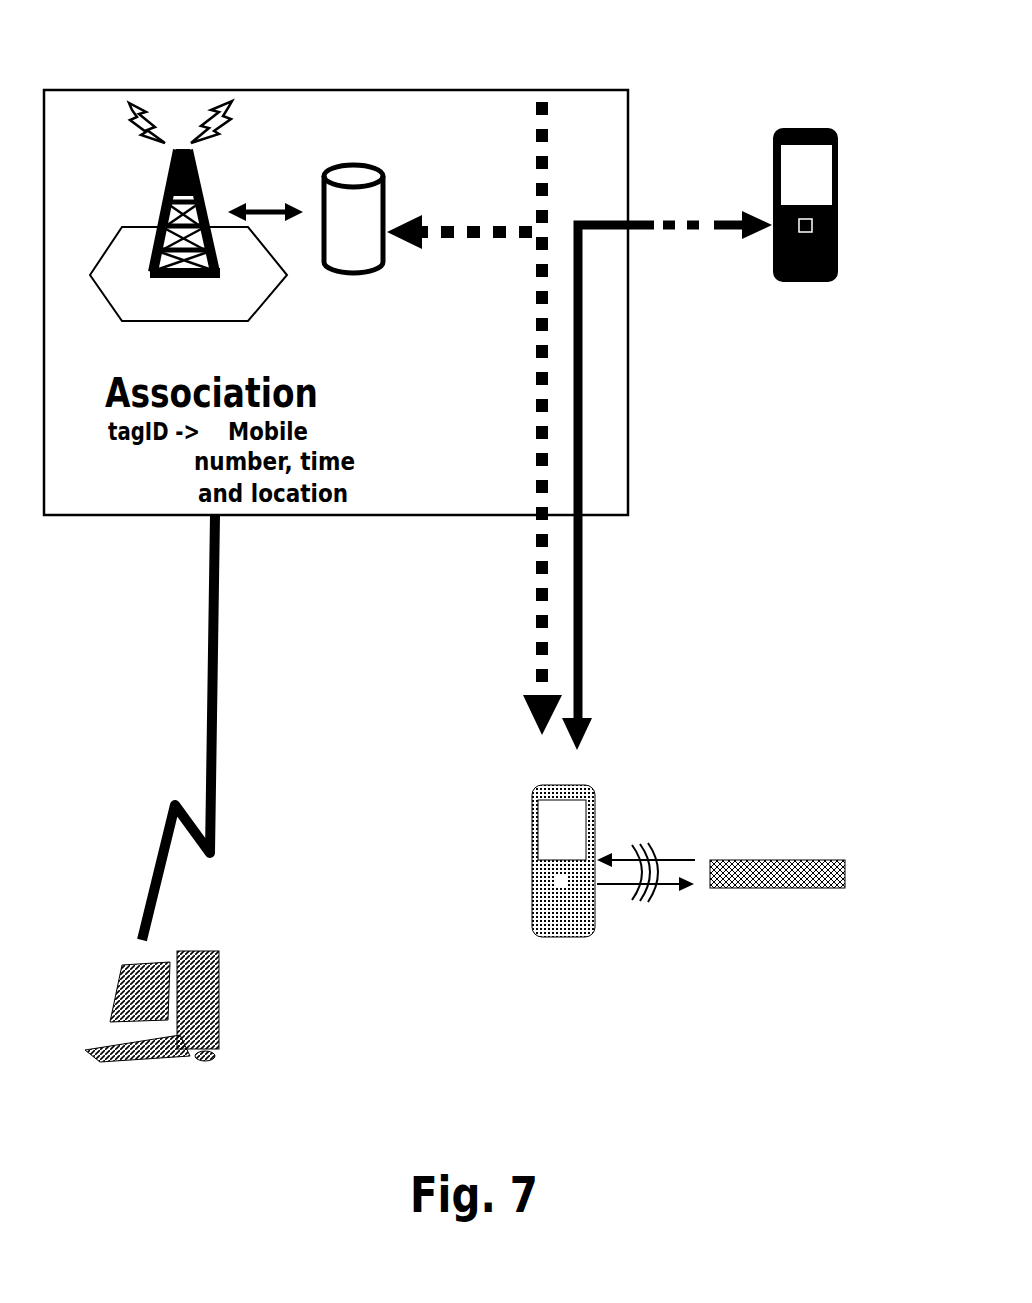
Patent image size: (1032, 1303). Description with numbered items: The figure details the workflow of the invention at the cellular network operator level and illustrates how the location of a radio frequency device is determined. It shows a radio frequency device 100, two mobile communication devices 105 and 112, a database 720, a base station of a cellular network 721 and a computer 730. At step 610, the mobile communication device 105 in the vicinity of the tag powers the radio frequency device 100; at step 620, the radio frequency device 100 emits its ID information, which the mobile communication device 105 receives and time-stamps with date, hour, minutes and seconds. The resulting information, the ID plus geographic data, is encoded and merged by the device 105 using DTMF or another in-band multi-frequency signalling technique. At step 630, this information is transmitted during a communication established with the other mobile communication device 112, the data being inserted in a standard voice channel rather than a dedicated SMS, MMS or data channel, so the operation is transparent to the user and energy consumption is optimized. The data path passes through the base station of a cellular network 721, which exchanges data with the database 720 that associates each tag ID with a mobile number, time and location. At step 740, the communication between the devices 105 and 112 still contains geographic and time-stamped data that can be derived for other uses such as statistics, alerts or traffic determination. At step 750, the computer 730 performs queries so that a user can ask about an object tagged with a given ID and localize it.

The radio frequency device 100 is at (771, 892).
The mobile communication device 105 is at (567, 940).
The mobile communication device 112 is at (798, 112).
The powering step 610 is at (645, 910).
The ID emission step 620 is at (646, 855).
The transmission step 630 is at (468, 238).
The database 720 is at (395, 177).
The base station of a cellular network 721 is at (203, 162).
The computer 730 is at (195, 955).
The data derivation step 740 is at (549, 163).
The query step 750 is at (208, 583).